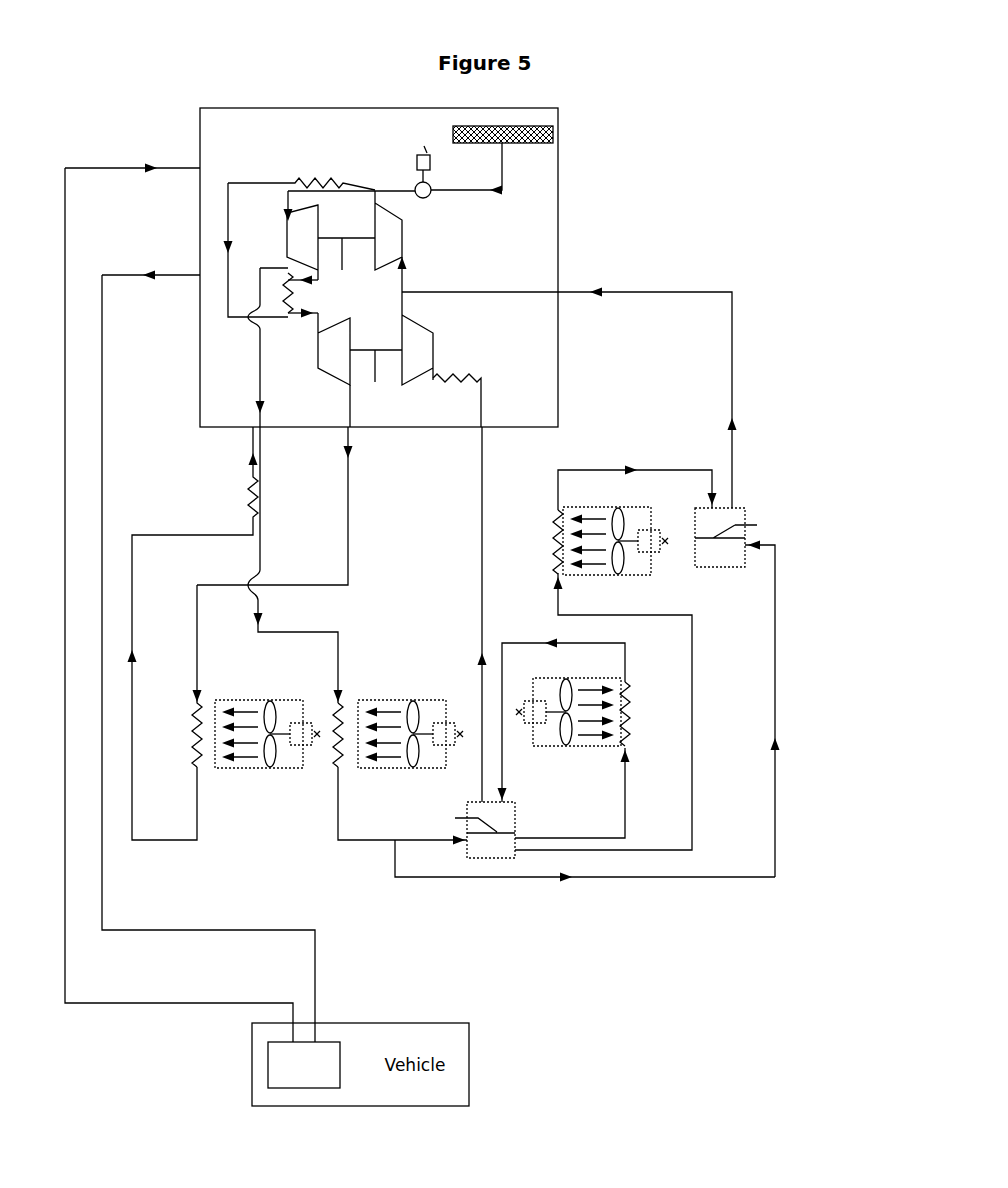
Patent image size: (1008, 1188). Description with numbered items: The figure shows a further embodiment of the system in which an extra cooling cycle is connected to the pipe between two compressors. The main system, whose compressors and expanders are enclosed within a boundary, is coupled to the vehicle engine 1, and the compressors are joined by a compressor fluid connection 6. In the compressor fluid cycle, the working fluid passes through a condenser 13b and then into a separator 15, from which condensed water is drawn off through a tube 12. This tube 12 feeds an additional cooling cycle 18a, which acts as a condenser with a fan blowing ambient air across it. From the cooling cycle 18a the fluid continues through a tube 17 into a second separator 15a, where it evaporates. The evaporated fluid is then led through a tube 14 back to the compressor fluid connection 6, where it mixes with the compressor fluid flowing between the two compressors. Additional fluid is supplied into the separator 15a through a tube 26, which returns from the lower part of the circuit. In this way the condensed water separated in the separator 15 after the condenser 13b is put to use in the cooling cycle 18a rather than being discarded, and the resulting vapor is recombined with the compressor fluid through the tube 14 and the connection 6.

The engine 1 is at (268, 1068).
The compressor fluid connection 6 is at (403, 280).
The tube 12 is at (692, 645).
The condenser 13b is at (380, 777).
The tube 14 is at (732, 327).
The separator 15 is at (490, 850).
The separator 15a is at (725, 505).
The tube 17 is at (598, 470).
The cooling cycle 18a is at (600, 516).
The tube 26 is at (775, 716).